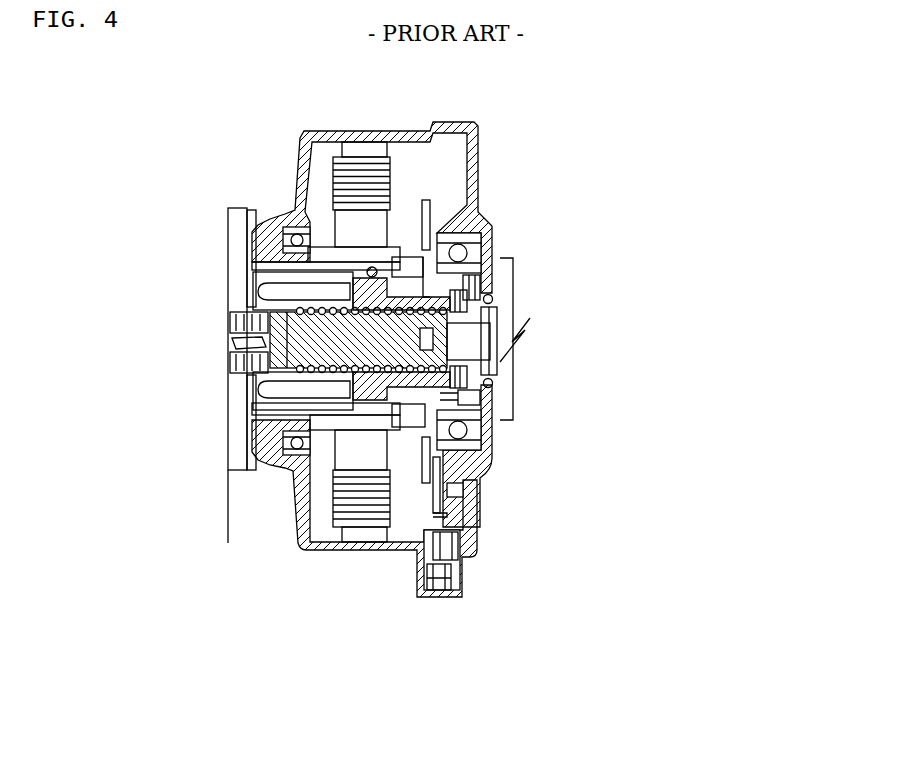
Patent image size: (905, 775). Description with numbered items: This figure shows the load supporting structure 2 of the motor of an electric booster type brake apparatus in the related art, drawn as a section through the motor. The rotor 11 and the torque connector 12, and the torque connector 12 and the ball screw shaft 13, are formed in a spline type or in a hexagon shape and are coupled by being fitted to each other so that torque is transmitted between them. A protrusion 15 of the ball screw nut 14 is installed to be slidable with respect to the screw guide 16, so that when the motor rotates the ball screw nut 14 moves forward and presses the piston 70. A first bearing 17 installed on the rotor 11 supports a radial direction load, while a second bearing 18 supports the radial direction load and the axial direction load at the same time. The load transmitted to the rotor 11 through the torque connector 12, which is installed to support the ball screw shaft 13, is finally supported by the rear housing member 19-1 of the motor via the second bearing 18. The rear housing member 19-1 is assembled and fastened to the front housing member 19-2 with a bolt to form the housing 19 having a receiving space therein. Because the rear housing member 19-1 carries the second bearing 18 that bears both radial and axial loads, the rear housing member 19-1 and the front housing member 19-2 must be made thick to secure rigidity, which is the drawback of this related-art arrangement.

The load supporting structure 2 is at (245, 549).
The rotor 11 is at (448, 233).
The torque connector 12 is at (470, 393).
The ball screw shaft 13 is at (277, 382).
The ball screw nut 14 is at (492, 300).
The protrusion 15 is at (372, 268).
The screw guide 16 is at (270, 270).
The first bearing 17 is at (273, 213).
The second bearing 18 is at (470, 240).
The housing 19 is at (452, 629).
The rear housing member 19-1 is at (480, 547).
The front housing member 19-2 is at (374, 557).
The piston 70 is at (262, 342).